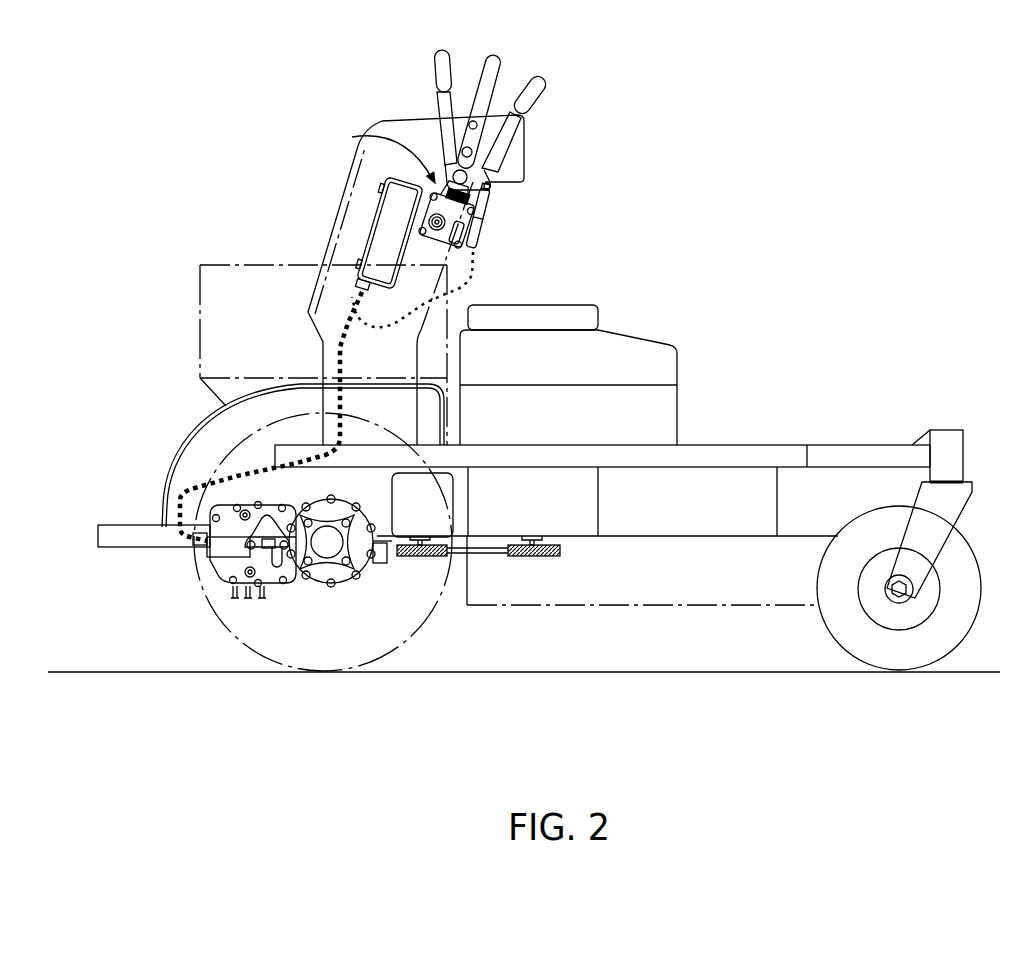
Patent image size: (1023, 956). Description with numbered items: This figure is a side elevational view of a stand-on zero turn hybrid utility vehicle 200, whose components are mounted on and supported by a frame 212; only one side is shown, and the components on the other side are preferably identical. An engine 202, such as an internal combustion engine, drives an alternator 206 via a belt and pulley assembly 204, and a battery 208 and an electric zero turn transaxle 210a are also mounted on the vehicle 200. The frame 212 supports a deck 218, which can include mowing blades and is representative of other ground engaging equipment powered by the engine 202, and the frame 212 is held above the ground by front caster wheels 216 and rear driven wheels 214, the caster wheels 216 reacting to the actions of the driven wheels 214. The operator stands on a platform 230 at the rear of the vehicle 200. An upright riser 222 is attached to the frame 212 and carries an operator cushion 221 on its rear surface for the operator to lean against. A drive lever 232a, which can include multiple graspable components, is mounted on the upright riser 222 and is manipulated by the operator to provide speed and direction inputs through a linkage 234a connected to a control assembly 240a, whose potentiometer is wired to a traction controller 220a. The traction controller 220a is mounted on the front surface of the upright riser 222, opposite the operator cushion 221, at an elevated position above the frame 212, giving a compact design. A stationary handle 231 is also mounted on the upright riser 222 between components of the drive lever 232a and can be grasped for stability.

The zero turn hybrid utility vehicle 200 is at (804, 185).
The engine 202 is at (583, 425).
The belt and pulley assembly 204 is at (485, 554).
The alternator 206 is at (453, 491).
The battery 208 is at (228, 264).
The electric zero turn transaxle 210a is at (360, 578).
The frame 212 is at (745, 445).
The rear driven wheels 214 is at (223, 627).
The front caster wheels 216 is at (835, 633).
The deck 218 is at (620, 606).
The traction controller 220a is at (381, 233).
The operator cushion 221 is at (358, 166).
The upright riser 222 is at (427, 117).
The platform 230 is at (131, 525).
The stationary handle 231 is at (493, 58).
The drive lever 232a is at (440, 53).
The linkage 234a is at (485, 216).
The control assembly 240a is at (366, 152).